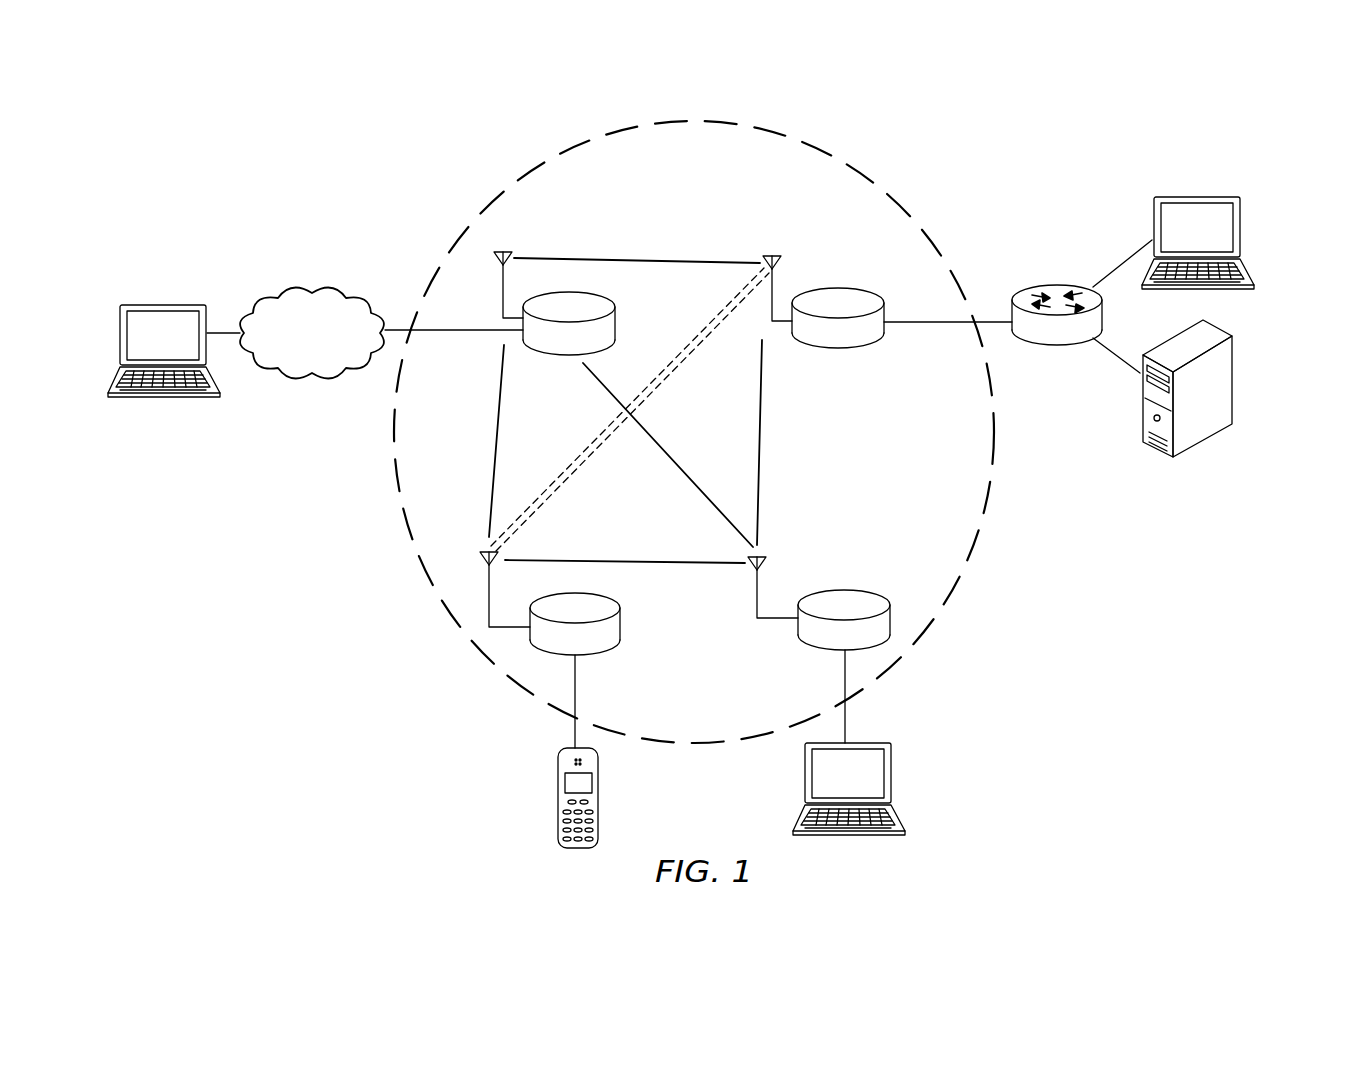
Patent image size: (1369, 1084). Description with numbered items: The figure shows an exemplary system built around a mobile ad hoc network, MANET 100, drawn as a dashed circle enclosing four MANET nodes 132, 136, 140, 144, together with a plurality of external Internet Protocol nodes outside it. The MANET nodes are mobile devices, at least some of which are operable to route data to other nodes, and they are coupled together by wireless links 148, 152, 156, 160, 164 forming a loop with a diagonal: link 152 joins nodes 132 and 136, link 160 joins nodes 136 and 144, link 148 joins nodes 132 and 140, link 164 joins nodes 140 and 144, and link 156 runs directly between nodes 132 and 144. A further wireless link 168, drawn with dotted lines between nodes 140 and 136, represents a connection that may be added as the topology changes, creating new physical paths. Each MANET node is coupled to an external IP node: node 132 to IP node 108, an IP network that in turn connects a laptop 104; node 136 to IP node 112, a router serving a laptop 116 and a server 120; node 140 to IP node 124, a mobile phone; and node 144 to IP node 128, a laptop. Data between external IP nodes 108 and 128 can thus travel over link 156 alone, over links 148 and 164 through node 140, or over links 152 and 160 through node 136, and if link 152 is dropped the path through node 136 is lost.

The MANET 100 is at (856, 162).
The client laptop computer 104 is at (160, 305).
The IP node 108 is at (290, 290).
The IP node 112 is at (1055, 285).
The laptop computer 116 is at (1195, 197).
The server computer 120 is at (1224, 385).
The IP node 124 is at (558, 808).
The IP node 128 is at (890, 770).
The MANET node 132 is at (540, 355).
The MANET node 136 is at (838, 288).
The MANET node 140 is at (600, 655).
The MANET node 144 is at (858, 590).
The wireless link 148 is at (497, 437).
The wireless link 152 is at (630, 260).
The wireless link 156 is at (665, 462).
The wireless link 160 is at (763, 400).
The wireless link 164 is at (663, 563).
The wireless link 168 is at (573, 468).